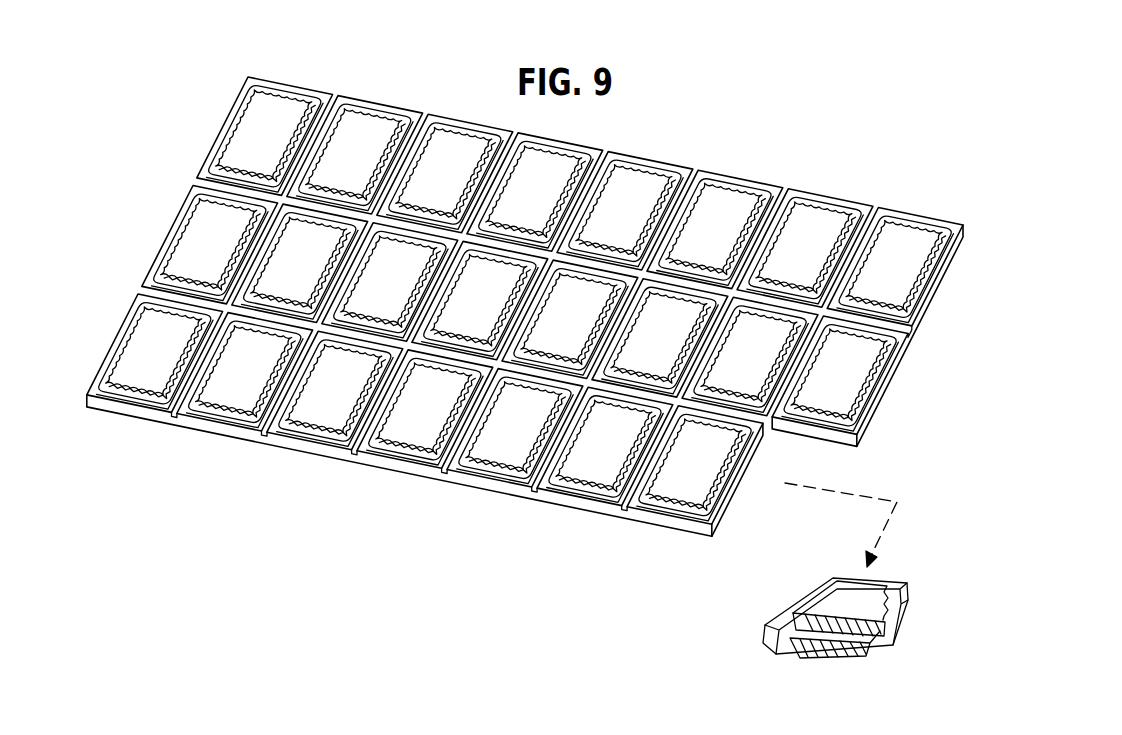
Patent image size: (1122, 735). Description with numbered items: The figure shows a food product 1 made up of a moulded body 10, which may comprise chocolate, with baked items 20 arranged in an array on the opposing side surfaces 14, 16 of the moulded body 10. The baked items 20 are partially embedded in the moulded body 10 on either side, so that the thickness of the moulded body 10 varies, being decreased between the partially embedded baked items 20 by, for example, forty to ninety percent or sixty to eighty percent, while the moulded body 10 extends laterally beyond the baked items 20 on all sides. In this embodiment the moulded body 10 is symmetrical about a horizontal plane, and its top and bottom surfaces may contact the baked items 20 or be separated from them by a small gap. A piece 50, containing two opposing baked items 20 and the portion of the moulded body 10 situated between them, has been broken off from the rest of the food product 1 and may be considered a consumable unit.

The food product 1 is at (525, 372).
The moulded body 10 is at (315, 88).
The side surface 14 is at (289, 428).
The side surface 16 is at (429, 477).
The baked item 20 is at (727, 210).
The piece 50 is at (907, 567).